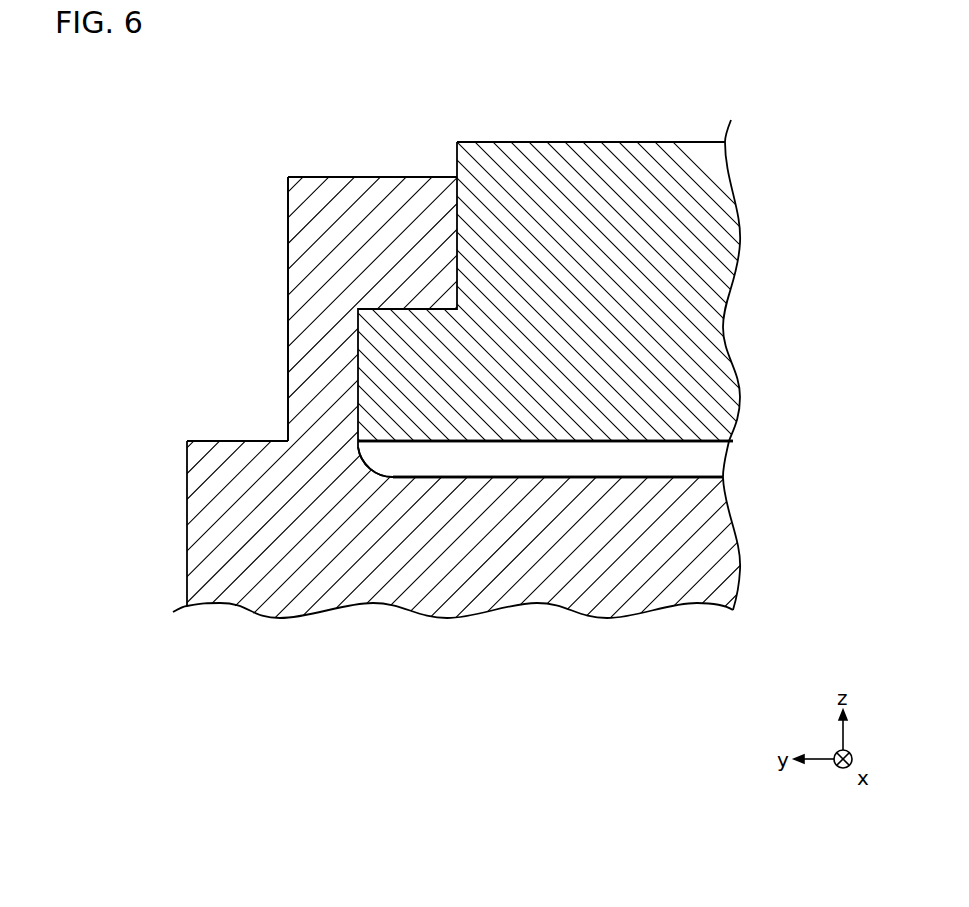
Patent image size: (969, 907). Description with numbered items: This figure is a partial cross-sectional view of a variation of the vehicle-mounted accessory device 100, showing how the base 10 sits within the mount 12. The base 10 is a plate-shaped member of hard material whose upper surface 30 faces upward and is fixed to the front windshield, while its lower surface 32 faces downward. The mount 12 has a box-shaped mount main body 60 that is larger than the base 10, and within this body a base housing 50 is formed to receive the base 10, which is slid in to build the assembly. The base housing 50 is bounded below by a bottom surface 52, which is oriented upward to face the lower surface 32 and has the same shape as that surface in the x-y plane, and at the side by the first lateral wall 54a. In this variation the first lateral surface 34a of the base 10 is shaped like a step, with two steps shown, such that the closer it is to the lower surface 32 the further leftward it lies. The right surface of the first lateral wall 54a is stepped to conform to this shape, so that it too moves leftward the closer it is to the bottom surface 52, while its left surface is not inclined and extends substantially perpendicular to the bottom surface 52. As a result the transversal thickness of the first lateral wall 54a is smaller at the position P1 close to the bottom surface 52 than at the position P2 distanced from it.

The vehicle-mounted accessory device 100 is at (495, 798).
The base 10 is at (641, 140).
The mount 12 is at (186, 576).
The upper surface 30 is at (528, 142).
The lower surface 32 is at (714, 443).
The first lateral surface 34a is at (457, 158).
The base housing 50 is at (719, 463).
The bottom surface 52 is at (642, 478).
The first lateral wall 54a is at (342, 190).
The mount main body 60 is at (727, 588).
The position close to the bottom surface P1 is at (287, 371).
The position distanced from the bottom surface P2 is at (287, 243).